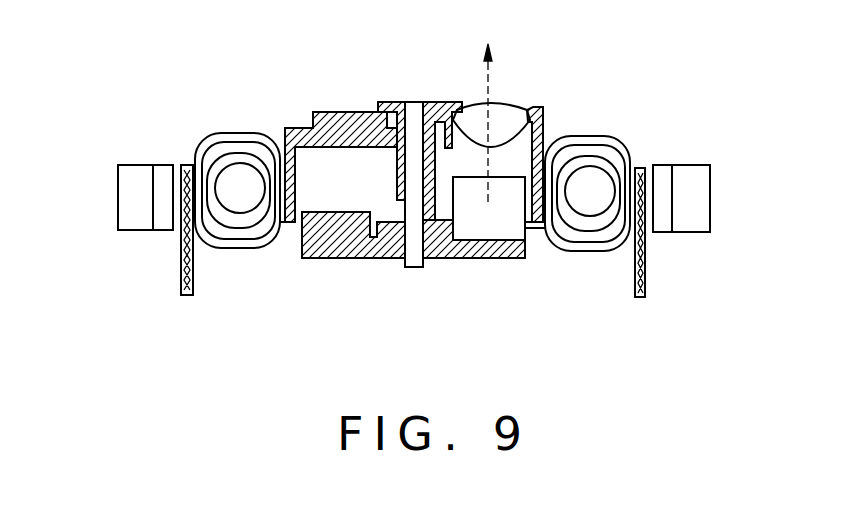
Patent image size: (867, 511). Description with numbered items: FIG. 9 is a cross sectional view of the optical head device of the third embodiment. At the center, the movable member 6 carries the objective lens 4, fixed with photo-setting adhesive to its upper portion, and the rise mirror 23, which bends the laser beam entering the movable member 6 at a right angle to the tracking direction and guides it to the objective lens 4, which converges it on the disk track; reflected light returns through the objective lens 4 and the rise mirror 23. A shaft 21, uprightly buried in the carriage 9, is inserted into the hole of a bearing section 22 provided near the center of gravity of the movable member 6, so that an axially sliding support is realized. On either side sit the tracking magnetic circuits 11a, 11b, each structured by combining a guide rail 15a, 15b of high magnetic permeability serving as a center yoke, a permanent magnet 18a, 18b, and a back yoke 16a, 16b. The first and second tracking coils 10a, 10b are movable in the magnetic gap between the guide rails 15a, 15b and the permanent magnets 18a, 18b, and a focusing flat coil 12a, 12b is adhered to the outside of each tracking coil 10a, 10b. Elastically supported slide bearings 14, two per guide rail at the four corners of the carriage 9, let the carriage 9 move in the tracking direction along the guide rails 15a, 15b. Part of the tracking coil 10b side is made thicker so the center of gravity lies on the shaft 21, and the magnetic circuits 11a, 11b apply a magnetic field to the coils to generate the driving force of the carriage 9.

The objective lens 4 is at (507, 108).
The movable member 6 is at (328, 110).
The carriage 9 is at (468, 250).
The first tracking coil 10a is at (627, 148).
The second tracking coil 10b is at (227, 246).
The tracking magnetic circuit 11a is at (690, 247).
The tracking magnetic circuit 11b is at (106, 214).
The focusing flat coil 12a is at (645, 296).
The focusing flat coil 12b is at (183, 294).
The slide bearing 14 is at (262, 153).
The guide rail 15a is at (588, 175).
The guide rail 15b is at (248, 202).
The back yoke 16a is at (703, 197).
The back yoke 16b is at (138, 170).
The permanent magnet 18a is at (663, 172).
The permanent magnet 18b is at (163, 223).
The shaft 21 is at (415, 264).
The bearing section 22 is at (400, 178).
The rise mirror 23 is at (500, 227).